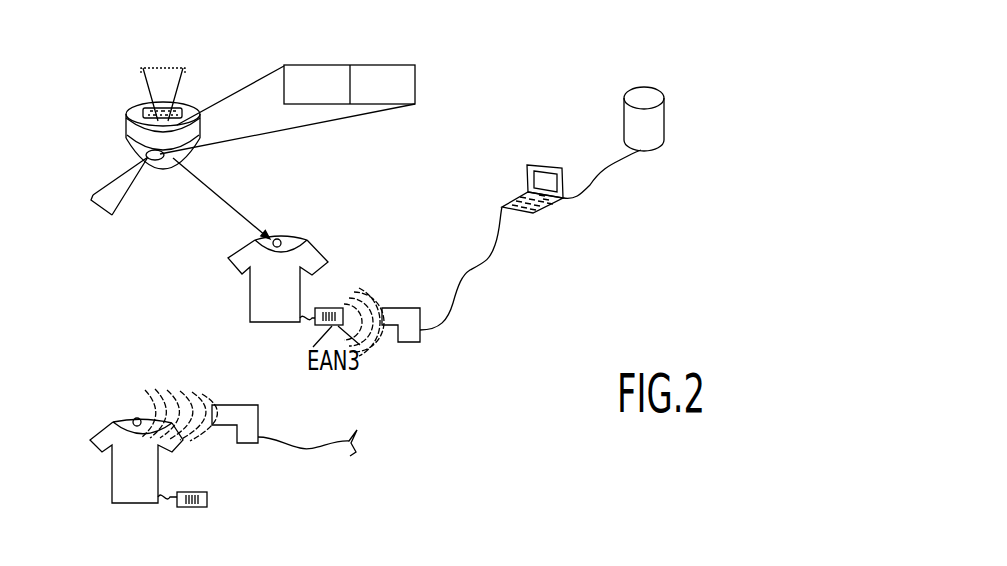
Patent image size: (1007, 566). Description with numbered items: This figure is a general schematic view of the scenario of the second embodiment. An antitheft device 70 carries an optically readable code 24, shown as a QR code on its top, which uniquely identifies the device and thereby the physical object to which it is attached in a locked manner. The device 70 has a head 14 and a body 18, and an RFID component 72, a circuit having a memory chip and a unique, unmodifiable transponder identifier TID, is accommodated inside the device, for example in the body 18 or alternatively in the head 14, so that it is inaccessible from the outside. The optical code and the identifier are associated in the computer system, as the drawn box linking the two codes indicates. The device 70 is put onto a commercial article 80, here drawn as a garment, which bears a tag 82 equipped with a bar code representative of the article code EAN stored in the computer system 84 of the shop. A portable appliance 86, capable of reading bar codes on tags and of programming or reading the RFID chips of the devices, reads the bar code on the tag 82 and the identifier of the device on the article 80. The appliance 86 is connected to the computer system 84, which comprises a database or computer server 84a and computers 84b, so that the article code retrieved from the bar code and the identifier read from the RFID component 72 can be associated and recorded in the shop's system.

The antitheft device 70 is at (229, 218).
The optically readable code 24 is at (130, 115).
The head 14 is at (130, 130).
The RFID component 72 is at (146, 155).
The body 18 is at (193, 153).
The commercial article 80 is at (250, 292).
The tag 82 is at (347, 308).
The portable appliance 86 is at (408, 308).
The computer system 84 is at (580, 208).
The database/computer server 84a is at (682, 119).
The computers 84b is at (540, 165).